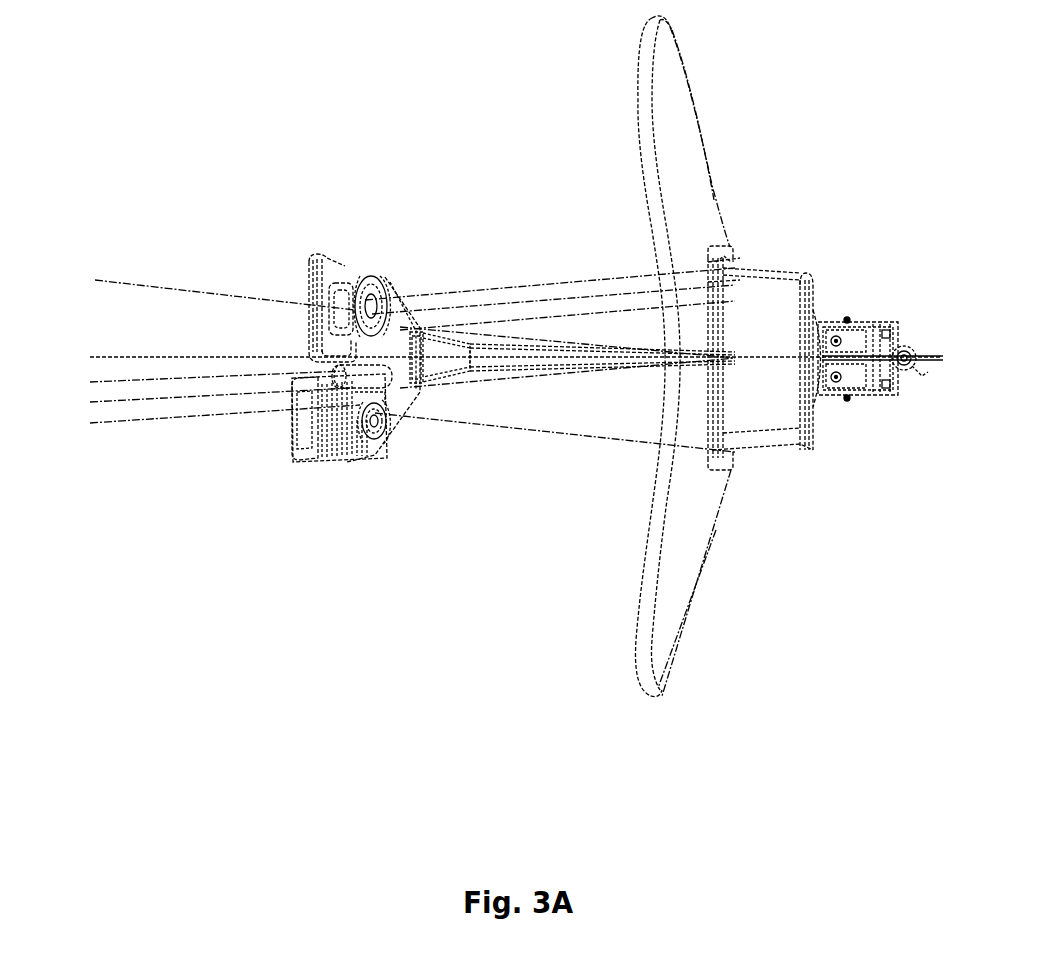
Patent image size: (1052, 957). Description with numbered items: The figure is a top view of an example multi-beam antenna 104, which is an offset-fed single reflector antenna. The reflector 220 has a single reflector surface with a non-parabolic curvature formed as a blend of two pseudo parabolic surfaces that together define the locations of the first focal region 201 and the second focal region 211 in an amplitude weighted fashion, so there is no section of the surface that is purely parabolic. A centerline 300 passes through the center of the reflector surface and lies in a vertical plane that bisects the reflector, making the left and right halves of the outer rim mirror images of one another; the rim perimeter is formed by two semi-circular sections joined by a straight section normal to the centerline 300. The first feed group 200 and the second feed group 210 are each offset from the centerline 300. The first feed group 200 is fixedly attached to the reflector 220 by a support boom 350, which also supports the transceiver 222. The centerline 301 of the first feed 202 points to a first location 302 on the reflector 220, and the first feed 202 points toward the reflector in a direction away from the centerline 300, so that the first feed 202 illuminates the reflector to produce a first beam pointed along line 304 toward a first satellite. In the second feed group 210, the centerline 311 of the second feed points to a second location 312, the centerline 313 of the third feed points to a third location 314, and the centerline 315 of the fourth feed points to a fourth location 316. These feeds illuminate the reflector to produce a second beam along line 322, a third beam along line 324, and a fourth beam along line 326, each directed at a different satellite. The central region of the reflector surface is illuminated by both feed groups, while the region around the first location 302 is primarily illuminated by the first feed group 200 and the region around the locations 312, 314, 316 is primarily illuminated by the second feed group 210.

The multi-beam antenna 104 is at (171, 68).
The reflector 220 is at (641, 78).
The second location 312 is at (722, 266).
The third location 314 is at (724, 287).
The fourth location 316 is at (726, 311).
The first location 302 is at (718, 454).
The centerline 300 is at (100, 357).
The line 304 is at (104, 281).
The line 326 is at (97, 382).
The line 324 is at (94, 402).
The line 322 is at (119, 425).
The second feed group 210 is at (350, 268).
The second focal region 211 is at (376, 283).
The centerline of the second feed 311 is at (420, 283).
The centerline of the third feed 313 is at (446, 306).
The centerline of the fourth feed 315 is at (508, 322).
The support boom 350 is at (529, 355).
The centerline of the first feed 301 is at (526, 430).
The first feed group 200 is at (337, 462).
The transceiver 222 is at (300, 430).
The first focal region 201 is at (386, 424).
The first feed 202 is at (379, 436).